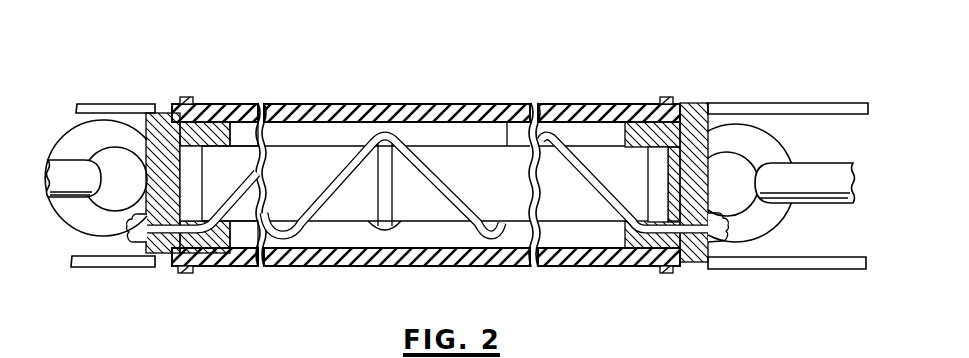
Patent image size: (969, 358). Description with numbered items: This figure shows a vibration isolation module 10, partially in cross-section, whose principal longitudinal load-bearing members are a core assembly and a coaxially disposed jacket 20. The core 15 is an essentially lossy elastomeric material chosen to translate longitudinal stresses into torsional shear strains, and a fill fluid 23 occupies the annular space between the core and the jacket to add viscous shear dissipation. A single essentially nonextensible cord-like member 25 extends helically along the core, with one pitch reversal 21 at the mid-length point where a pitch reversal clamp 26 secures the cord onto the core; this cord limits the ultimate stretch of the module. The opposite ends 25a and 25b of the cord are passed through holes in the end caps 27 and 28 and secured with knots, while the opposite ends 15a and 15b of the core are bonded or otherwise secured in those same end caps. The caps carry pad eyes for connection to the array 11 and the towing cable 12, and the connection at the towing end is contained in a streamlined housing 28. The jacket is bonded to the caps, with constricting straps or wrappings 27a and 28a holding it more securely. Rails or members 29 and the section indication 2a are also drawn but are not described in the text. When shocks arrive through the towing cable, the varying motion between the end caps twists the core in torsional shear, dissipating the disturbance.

The vibration isolation module 10 is at (552, 64).
The array 11 is at (50, 158).
The towing cable 12 is at (828, 163).
The core 15 is at (508, 122).
The core end 15a is at (200, 216).
The core end 15b is at (667, 208).
The jacket 20 is at (314, 104).
The pitch reversal 21 is at (368, 141).
The fill fluid 23 is at (488, 143).
The essentially nonextensible cord-like member 25 is at (448, 190).
The cord end 25a is at (141, 250).
The cord end 25b is at (719, 240).
The pitch reversal clamp 26 is at (366, 224).
The end cap 27 is at (166, 115).
The constricting metal strap or wrapping 27a is at (188, 97).
The end cap 28 is at (692, 110).
The constricting metal strap or wrapping 28a is at (667, 97).
The guide rails 29 is at (784, 103).
The section line 2a- 2a is at (448, 287).